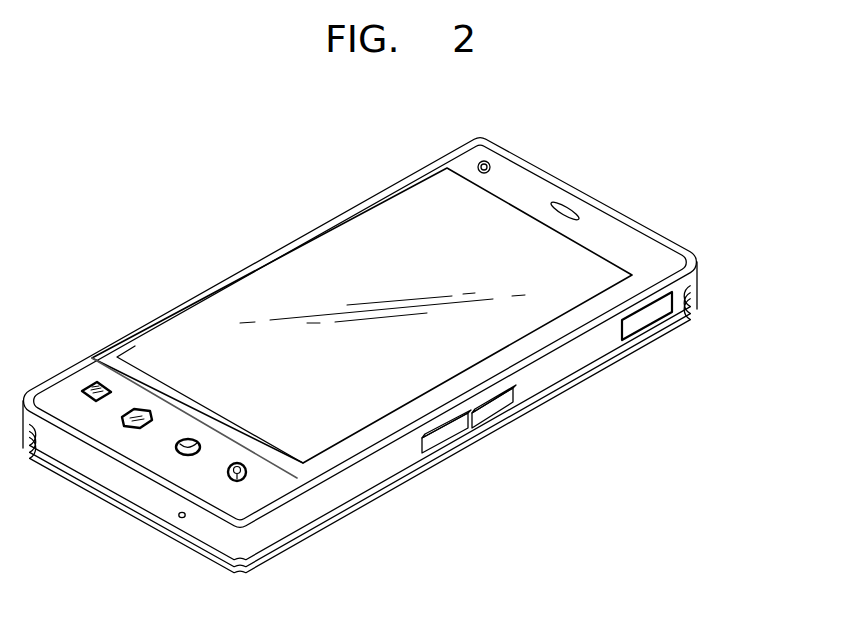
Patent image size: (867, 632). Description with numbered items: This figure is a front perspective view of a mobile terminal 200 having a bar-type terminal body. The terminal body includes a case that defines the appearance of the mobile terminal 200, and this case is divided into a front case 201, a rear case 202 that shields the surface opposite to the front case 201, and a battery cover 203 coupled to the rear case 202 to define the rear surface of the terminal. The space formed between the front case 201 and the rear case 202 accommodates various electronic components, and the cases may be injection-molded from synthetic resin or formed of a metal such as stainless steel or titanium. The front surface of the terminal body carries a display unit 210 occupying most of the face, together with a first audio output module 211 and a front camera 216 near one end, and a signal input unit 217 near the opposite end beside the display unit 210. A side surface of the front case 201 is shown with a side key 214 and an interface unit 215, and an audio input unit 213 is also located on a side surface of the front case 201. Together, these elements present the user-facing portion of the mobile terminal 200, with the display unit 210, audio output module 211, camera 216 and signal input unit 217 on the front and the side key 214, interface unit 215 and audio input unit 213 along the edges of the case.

The mobile terminal 200 is at (207, 241).
The front case 201 is at (696, 261).
The rear case 202 is at (688, 292).
The battery cover 203 is at (661, 333).
The display unit 210 is at (340, 253).
The first audio output module 211 is at (568, 207).
The audio input unit 213 is at (179, 518).
The side key 214 is at (501, 410).
The interface unit 215 is at (628, 340).
The front camera 216 is at (489, 163).
The signal input unit 217 is at (90, 384).